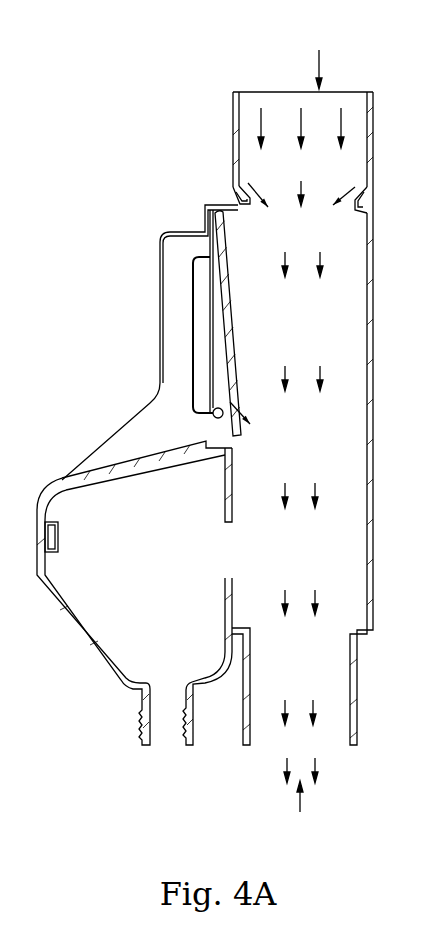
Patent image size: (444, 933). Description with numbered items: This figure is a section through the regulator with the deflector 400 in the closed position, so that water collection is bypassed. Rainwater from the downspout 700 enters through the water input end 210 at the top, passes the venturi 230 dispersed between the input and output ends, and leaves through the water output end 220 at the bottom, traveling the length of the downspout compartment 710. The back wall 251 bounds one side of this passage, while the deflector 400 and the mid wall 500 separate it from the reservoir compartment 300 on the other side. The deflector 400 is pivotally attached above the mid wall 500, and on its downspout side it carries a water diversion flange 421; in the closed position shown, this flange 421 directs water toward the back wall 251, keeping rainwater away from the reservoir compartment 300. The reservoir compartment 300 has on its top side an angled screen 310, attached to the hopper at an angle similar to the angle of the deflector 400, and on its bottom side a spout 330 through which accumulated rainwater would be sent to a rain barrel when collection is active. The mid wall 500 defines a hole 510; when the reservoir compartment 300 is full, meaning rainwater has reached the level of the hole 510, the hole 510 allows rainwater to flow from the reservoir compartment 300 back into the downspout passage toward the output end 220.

The water input end 210 is at (320, 60).
The water output end 220 is at (301, 809).
The venturi 230 is at (240, 205).
The back wall 251 is at (373, 318).
The reservoir compartment 300 is at (143, 657).
The screen 310 is at (111, 462).
The spout 330 is at (142, 737).
The deflector 400 is at (190, 307).
The water diversion flange 421 is at (239, 432).
The mid wall 500 is at (222, 478).
The hole 510 is at (232, 552).
The downspout 700 is at (256, 124).
The downspout compartment 710 is at (319, 766).